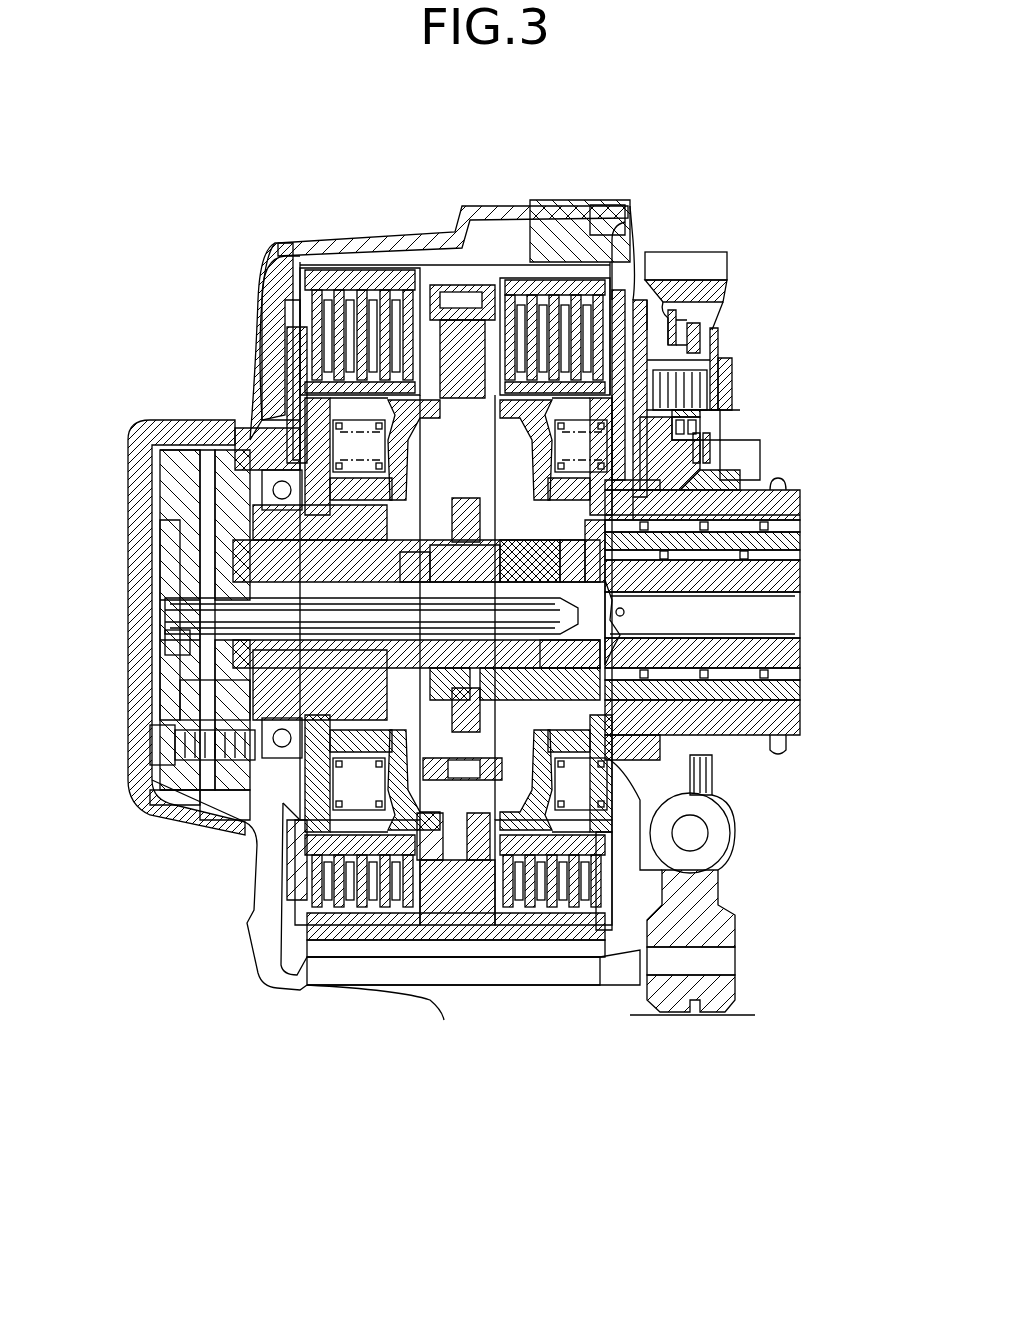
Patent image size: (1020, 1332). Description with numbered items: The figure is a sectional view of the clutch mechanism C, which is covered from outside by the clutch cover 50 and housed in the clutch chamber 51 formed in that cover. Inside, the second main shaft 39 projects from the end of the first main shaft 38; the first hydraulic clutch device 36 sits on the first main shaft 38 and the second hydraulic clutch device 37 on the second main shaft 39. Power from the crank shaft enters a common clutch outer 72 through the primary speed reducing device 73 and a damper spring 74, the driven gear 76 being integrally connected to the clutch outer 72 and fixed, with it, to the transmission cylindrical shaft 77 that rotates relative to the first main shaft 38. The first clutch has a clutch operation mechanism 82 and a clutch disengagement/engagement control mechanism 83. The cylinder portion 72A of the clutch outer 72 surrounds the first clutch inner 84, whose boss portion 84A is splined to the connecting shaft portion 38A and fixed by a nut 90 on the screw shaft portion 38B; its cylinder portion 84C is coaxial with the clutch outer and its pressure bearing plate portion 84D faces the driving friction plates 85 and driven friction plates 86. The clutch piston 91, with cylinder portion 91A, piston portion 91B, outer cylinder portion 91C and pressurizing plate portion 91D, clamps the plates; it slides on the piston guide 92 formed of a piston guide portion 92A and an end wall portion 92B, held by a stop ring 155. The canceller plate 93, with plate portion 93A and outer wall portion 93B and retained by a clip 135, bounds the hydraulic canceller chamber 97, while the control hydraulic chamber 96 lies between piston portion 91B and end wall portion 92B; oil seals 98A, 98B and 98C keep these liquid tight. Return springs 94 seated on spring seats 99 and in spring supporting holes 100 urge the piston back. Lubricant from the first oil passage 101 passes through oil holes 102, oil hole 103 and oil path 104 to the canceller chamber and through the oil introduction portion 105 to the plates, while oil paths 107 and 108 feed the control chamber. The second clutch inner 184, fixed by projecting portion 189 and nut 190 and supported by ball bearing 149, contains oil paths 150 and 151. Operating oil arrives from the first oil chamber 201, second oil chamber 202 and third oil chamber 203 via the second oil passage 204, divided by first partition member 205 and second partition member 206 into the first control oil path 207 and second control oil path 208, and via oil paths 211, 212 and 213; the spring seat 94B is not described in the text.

The first hydraulic clutch device 36 is at (480, 262).
The second hydraulic clutch device 37 is at (425, 262).
The first main shaft 38 is at (800, 540).
The connecting shaft portion 38A is at (505, 668).
The screw shaft portion 38B is at (455, 662).
The second main shaft 39 is at (800, 583).
The clutch cover 50 is at (262, 240).
The clutch chamber 51 is at (352, 240).
The clutch outer 72 is at (640, 285).
The cylinder portion 72A is at (515, 262).
The primary speed reducing device 73 is at (762, 248).
The damper spring 74 is at (712, 858).
The driven gear 76 is at (705, 252).
The transmission cylindrical shaft 77 is at (790, 526).
The clutch operation mechanism 82 is at (540, 908).
The clutch disengagement/engagement control mechanism 83 is at (462, 925).
The first clutch inner 84 is at (732, 375).
The boss portion 84A is at (520, 560).
The cylinder portion 84C is at (555, 240).
The pressure bearing plate portion 84D is at (700, 335).
The driving friction plates 85 is at (318, 290).
The driven friction plates 86 is at (268, 300).
The nut 90 is at (448, 712).
The clutch piston 91 is at (398, 268).
The cylinder portion 91A is at (405, 478).
The piston portion 91B is at (410, 455).
The outer cylinder portion 91C is at (440, 428).
The pressurizing plate portion 91D is at (440, 330).
The piston guide 92 is at (293, 400).
The piston guide portion 92A is at (510, 957).
The end wall portion 92B is at (490, 985).
The canceller plate 93 is at (290, 345).
The plate portion 93A is at (740, 478).
The outer wall portion 93B is at (720, 412).
The return spring 94 is at (262, 300).
The spring seat 94B is at (700, 428).
The control hydraulic chamber 96 is at (490, 500).
The hydraulic canceller chamber 97 is at (760, 462).
The oil seal 98A is at (575, 940).
The oil seal 98B is at (786, 742).
The oil seal 98C is at (462, 532).
The spring seat 99 is at (700, 436).
The spring supporting hole 100 is at (710, 445).
The first oil passage 101 is at (790, 613).
The oil holes 102 is at (625, 614).
The oil hole 103 is at (800, 556).
The oil path 104 is at (800, 524).
The oil introduction portion 105 is at (786, 484).
The oil paths 107 is at (594, 560).
The oil path 108 is at (568, 560).
The clip 135 is at (300, 466).
The ball bearing 149 is at (175, 795).
The oil path 150 is at (385, 538).
The oil path 151 is at (210, 698).
The stop ring 155 is at (468, 556).
The second clutch inner 184 is at (250, 460).
The projecting portion 189 is at (420, 560).
The nut 190 is at (215, 455).
The first oil chamber 201 is at (140, 568).
The second oil chamber 202 is at (200, 548).
The third oil chamber 203 is at (165, 745).
The second oil passage 204 is at (790, 660).
The first partition member 205 is at (170, 615).
The second partition member 206 is at (170, 640).
The first control oil path 207 is at (500, 613).
The second control oil path 208 is at (365, 611).
The oil path 211 is at (790, 675).
The oil path 212 is at (790, 692).
The oil path 213 is at (225, 800).
The clutch mechanism C is at (547, 1040).